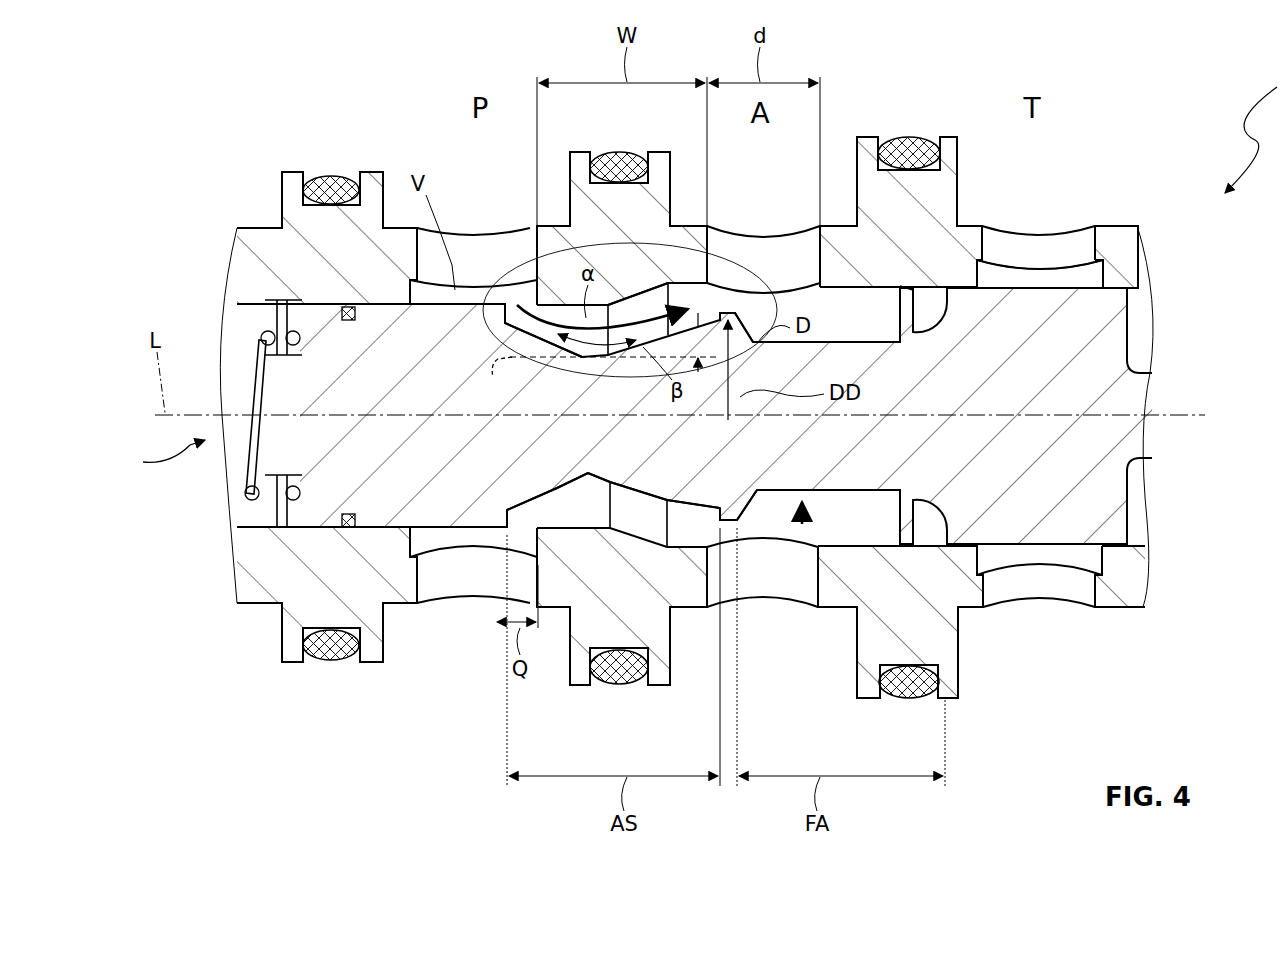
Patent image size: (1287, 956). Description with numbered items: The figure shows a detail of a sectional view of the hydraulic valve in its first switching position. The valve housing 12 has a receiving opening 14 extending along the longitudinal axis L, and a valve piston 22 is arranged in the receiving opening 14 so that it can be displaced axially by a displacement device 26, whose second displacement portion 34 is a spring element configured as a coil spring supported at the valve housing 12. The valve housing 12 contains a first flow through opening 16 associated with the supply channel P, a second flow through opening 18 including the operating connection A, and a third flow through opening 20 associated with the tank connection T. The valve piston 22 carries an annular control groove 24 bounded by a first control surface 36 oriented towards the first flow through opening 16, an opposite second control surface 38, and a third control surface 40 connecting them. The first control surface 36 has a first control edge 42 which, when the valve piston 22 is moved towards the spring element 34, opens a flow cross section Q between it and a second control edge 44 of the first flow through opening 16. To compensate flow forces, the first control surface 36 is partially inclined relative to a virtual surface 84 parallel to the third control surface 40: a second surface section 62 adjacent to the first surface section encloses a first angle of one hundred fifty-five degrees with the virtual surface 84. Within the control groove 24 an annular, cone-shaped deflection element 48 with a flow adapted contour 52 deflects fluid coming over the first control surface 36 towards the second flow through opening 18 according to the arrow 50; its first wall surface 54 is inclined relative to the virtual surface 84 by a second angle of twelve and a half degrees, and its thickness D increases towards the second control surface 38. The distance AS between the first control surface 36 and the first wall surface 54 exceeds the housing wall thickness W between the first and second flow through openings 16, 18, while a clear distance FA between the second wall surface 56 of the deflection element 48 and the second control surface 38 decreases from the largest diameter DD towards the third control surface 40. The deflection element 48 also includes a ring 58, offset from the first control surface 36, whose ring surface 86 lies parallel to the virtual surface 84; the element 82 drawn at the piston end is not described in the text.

The valve housing 12 is at (686, 443).
The receiving opening 14 is at (683, 422).
The first flow through opening 16 is at (470, 250).
The second flow through opening 18 is at (758, 245).
The third flow through opening 20 is at (1033, 250).
The valve piston 22 is at (1068, 281).
The control groove 24 is at (803, 527).
The displacement device 26 is at (158, 458).
The second displacement portion 34 is at (242, 494).
The first control surface 36 is at (500, 515).
The second control surface 38 is at (910, 699).
The third control surface 40 is at (828, 493).
The first control edge 42 is at (503, 300).
The second control edge 44 is at (552, 307).
The deflection element 48 is at (692, 488).
The arrow 50 is at (640, 290).
The flow adapted contour 52 is at (612, 487).
The first wall surface 54 is at (655, 493).
The flank 56 is at (755, 492).
The ring 58 is at (752, 500).
The second surface section 62 is at (555, 490).
The coupling element 82 is at (275, 385).
The virtual surface 84 is at (518, 377).
The ring surface 86 is at (732, 308).